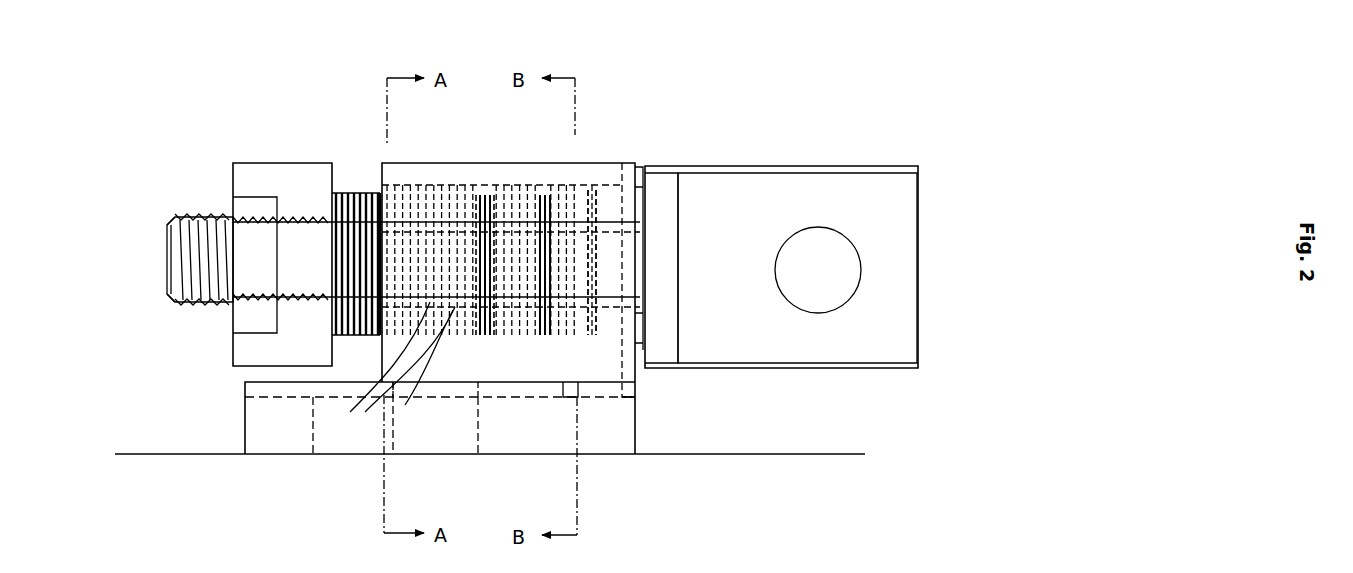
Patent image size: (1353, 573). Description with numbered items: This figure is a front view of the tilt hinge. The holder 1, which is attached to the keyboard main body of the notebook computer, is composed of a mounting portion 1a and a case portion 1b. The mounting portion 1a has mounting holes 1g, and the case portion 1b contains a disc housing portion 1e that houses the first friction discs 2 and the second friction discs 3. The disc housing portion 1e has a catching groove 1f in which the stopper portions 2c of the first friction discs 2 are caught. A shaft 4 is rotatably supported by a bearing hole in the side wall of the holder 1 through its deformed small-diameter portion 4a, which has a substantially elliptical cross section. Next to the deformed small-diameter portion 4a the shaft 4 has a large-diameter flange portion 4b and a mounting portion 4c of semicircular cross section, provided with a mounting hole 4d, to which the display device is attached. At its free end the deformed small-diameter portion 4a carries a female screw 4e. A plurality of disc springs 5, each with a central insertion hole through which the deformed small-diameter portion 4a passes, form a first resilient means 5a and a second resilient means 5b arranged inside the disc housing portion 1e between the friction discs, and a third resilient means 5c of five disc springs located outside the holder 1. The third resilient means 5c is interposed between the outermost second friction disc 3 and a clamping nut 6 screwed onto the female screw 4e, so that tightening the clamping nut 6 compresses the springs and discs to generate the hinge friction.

The holder 1 is at (493, 160).
The mounting portion 1a is at (460, 434).
The case portion 1b is at (457, 185).
The disc housing portion 1e is at (414, 185).
The catching groove 1f is at (260, 394).
The mounting holes 1g is at (320, 456).
The first friction discs 2 is at (375, 320).
The stopper portions 2c is at (460, 396).
The second friction discs 3 is at (468, 187).
The shaft 4 is at (806, 163).
The deformed small-diameter portion 4a is at (177, 264).
The flange portion 4b is at (663, 346).
The mounting portion 4c is at (888, 272).
The mounting hole 4d is at (853, 290).
The female screw 4e is at (196, 303).
The disc springs 5 is at (352, 190).
The first resilient means 5a is at (590, 190).
The second resilient means 5b is at (480, 192).
The third resilient means 5c is at (364, 162).
The clamping nut 6 is at (293, 171).